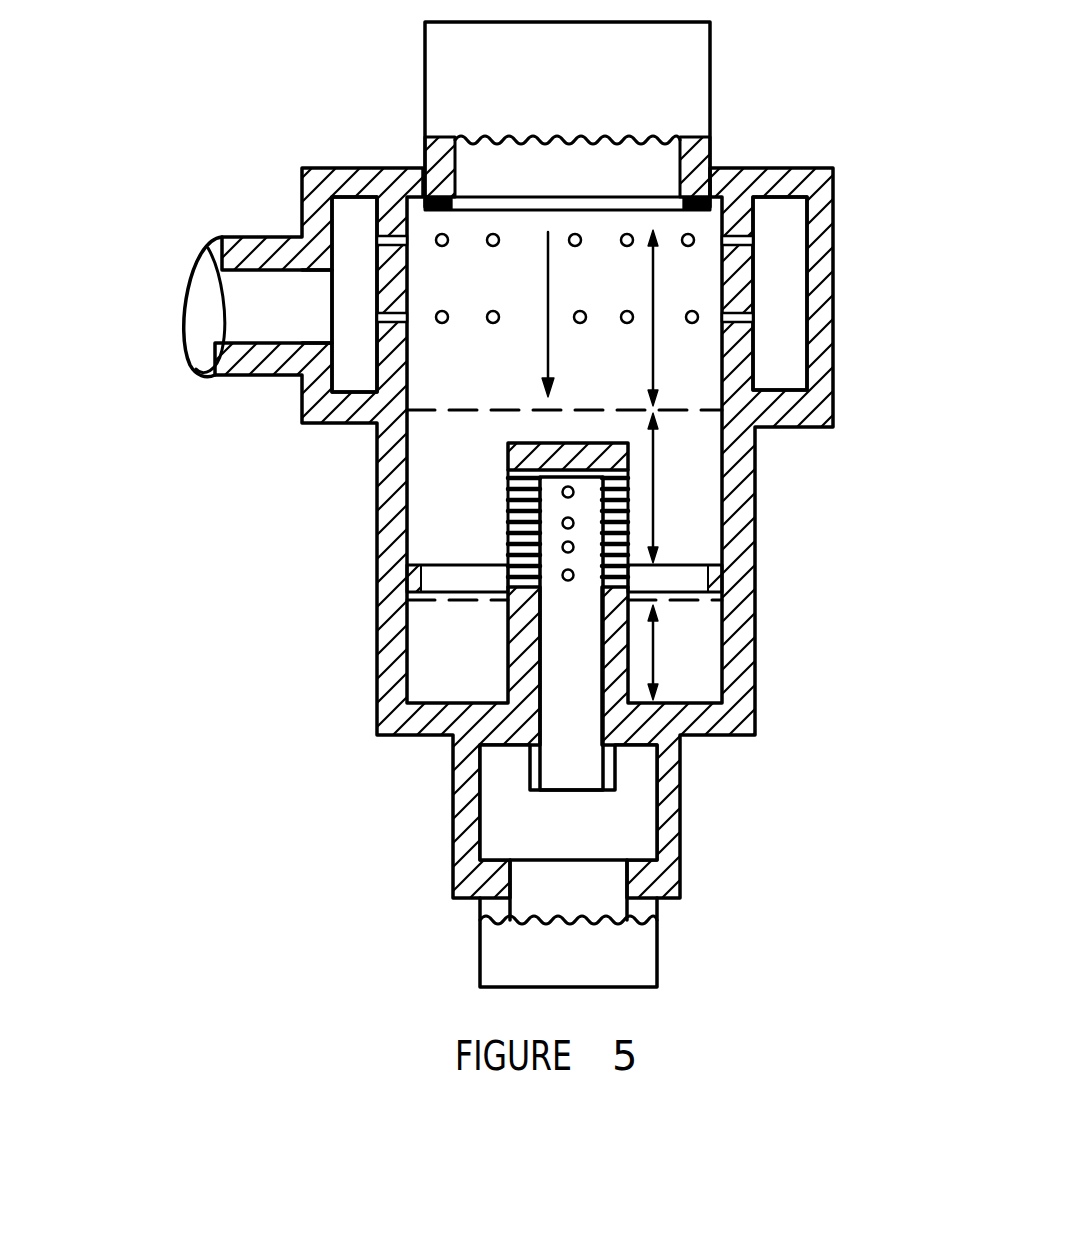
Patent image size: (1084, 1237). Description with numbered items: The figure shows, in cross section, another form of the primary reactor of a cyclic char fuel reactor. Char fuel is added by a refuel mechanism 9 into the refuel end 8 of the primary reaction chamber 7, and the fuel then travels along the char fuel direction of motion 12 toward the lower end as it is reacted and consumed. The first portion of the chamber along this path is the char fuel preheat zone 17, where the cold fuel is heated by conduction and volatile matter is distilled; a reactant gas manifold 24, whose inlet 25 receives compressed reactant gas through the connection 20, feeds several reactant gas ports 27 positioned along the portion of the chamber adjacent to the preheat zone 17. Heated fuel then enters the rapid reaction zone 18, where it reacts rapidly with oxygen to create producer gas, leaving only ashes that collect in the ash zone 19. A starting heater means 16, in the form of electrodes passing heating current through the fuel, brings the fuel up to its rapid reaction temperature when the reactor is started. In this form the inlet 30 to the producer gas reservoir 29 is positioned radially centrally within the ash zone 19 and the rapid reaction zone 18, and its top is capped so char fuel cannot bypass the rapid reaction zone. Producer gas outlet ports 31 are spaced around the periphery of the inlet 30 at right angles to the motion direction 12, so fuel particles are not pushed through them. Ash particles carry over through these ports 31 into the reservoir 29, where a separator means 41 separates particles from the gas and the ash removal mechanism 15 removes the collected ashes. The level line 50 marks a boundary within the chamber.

The primary reaction chamber 7 is at (473, 322).
The refuel end 8 is at (598, 230).
The refuel mechanism 9 is at (672, 68).
The char fuel direction of motion 12 is at (548, 285).
The ash removal mechanism 15 is at (625, 953).
The starting heater means 16 is at (752, 170).
The char fuel preheat zone 17 is at (657, 353).
The rapid reaction zone 18 is at (715, 565).
The ash zone 19 is at (690, 600).
The connection 20 is at (237, 300).
The reactant gas manifold 24 is at (785, 225).
The inlet 25 is at (330, 310).
The reactant gas ports 27 is at (745, 240).
The producer gas reservoir 29 is at (623, 810).
The inlet to the producer gas reservoir 30 is at (553, 550).
The producer gas outlet ports 31 is at (567, 522).
The separator means 41 is at (555, 765).
The liquid level line 50 is at (590, 437).